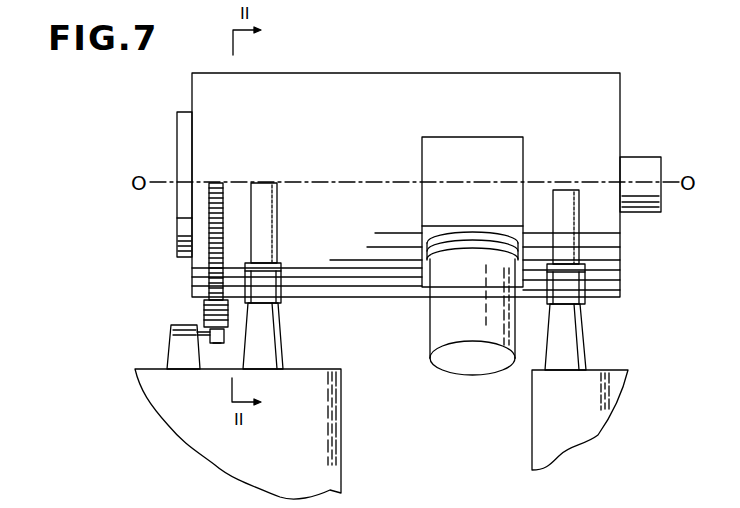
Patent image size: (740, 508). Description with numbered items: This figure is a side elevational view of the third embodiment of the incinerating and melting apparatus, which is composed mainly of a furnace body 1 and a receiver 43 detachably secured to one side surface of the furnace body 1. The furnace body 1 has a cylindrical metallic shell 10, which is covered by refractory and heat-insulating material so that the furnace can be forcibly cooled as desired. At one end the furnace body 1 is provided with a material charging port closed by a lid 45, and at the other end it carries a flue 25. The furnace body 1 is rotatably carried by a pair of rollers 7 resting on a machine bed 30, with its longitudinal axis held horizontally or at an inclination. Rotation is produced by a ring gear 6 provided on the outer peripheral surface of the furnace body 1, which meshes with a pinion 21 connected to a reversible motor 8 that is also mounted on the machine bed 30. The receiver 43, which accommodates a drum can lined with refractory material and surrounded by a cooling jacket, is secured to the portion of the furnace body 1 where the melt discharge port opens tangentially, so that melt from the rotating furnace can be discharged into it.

The furnace body 1 is at (335, 92).
The cylindrical metallic shell 10 is at (458, 73).
The flue 25 is at (642, 167).
The lid 45 is at (181, 200).
The ring gear 6 is at (209, 270).
The pinion 21 is at (204, 312).
The reversible motor 8 is at (170, 338).
The rollers 7 is at (270, 284).
The receiver 43 is at (470, 376).
The machine bed 30 is at (315, 450).